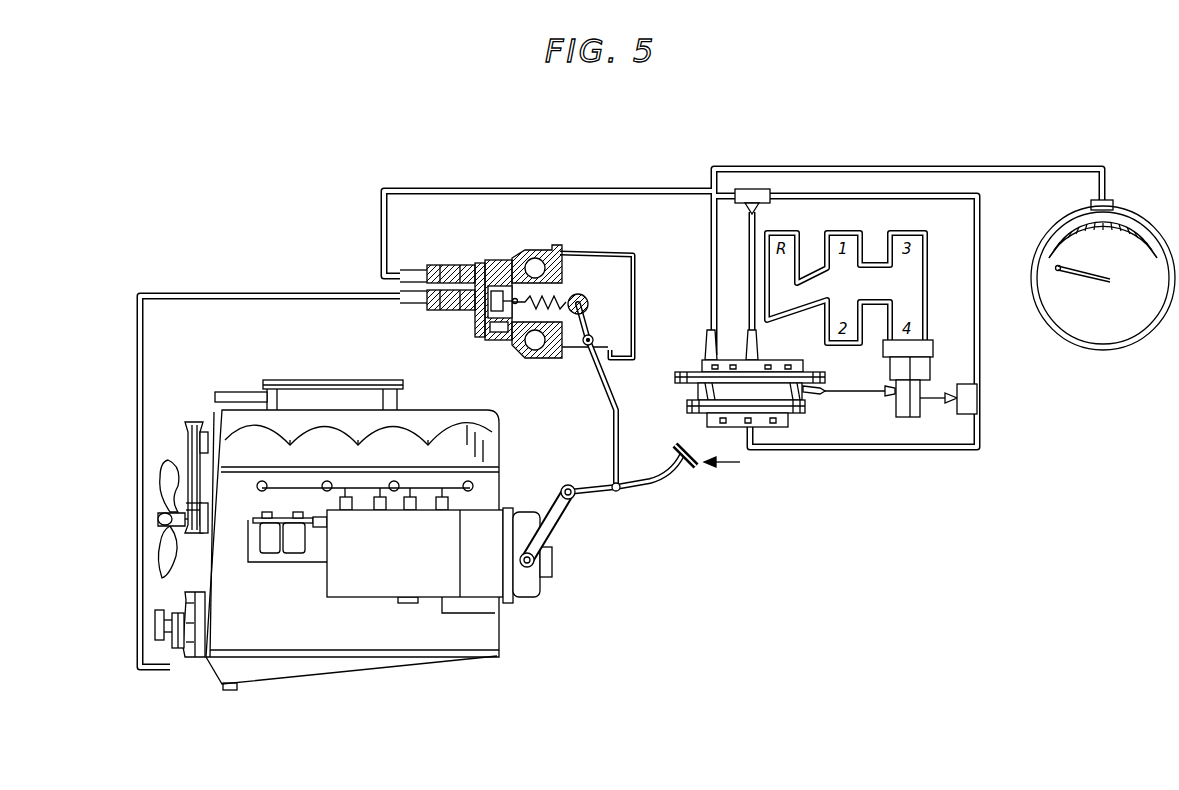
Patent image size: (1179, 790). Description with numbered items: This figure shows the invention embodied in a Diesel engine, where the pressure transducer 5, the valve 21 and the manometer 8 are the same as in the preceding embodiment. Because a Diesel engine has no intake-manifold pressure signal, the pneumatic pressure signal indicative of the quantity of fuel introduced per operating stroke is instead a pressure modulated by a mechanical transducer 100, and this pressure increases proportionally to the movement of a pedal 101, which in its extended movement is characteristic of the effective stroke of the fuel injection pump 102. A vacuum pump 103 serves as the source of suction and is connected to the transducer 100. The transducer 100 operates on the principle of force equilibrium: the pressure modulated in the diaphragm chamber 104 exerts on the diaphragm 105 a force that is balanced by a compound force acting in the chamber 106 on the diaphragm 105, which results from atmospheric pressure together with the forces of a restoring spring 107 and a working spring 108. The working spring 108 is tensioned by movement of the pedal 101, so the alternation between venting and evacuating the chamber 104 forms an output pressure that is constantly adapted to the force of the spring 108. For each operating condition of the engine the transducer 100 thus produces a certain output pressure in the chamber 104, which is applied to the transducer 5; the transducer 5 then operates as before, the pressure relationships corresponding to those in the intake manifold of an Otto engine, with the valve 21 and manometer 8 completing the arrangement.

The pressure transducer 5 is at (807, 414).
The manometer 8 is at (1127, 347).
The valve 21 is at (918, 409).
The mechanical transducer 100 is at (516, 301).
The pedal 101 is at (662, 474).
The fuel injection pump 102 is at (510, 512).
The vacuum pump 103 is at (192, 655).
The diaphragm chamber 104 is at (483, 264).
The diaphragm 105 is at (474, 326).
The chamber 106 is at (491, 338).
The restoring spring 107 is at (502, 348).
The working spring 108 is at (574, 318).